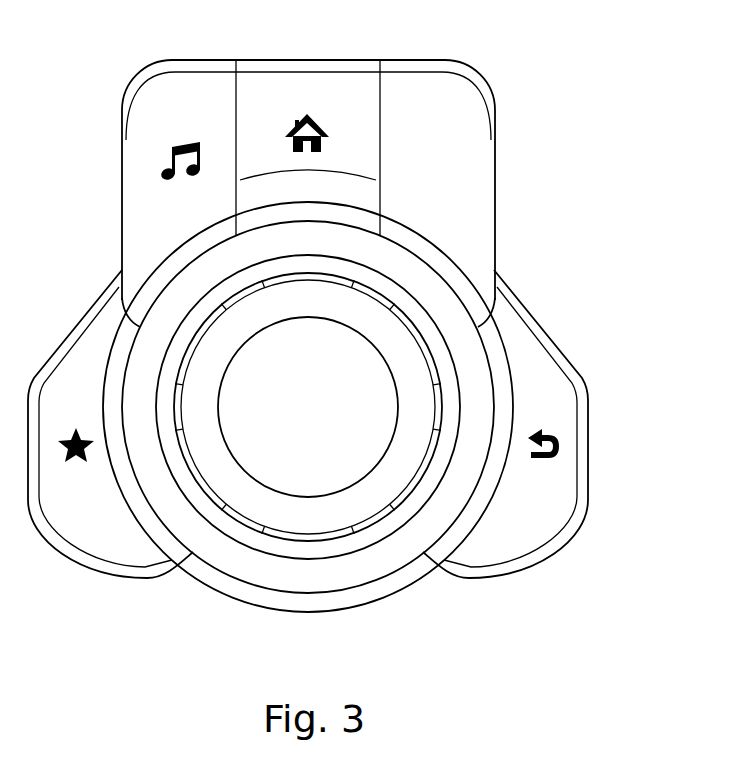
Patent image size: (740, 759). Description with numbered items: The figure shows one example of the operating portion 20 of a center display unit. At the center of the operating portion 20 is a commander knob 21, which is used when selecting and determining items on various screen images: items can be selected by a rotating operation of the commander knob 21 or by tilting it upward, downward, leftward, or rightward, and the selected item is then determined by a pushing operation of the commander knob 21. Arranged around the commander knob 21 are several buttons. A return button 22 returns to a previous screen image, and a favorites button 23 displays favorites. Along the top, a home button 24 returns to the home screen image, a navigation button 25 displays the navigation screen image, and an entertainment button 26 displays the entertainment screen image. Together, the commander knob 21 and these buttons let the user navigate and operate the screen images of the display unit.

The operating portion 20 is at (548, 56).
The commander knob 21 is at (300, 475).
The return button 22 is at (506, 535).
The favorites button 23 is at (98, 535).
The home button 24 is at (307, 82).
The navigation button 25 is at (430, 82).
The entertainment button 26 is at (178, 82).